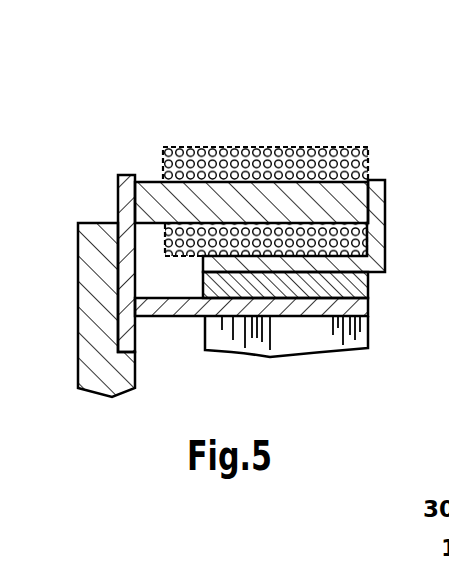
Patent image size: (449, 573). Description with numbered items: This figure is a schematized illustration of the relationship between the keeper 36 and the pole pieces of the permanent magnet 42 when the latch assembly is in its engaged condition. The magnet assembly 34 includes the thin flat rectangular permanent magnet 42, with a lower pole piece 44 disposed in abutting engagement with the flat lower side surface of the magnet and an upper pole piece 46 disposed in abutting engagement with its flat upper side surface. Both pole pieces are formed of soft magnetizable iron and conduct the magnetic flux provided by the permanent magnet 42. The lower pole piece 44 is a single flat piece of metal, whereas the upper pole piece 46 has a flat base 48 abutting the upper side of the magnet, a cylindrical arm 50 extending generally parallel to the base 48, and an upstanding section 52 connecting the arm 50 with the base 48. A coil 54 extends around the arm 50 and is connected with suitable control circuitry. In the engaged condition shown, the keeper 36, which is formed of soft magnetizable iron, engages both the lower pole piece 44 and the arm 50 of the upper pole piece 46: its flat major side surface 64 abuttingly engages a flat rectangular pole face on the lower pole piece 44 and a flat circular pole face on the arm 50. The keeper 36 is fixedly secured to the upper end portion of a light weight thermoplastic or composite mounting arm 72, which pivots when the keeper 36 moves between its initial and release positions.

The magnet assembly 34 is at (334, 123).
The keeper 36 is at (112, 189).
The permanent magnet 42 is at (272, 280).
The lower pole piece 44 is at (327, 316).
The upper pole piece 46 is at (390, 187).
The flat base 48 is at (367, 278).
The cylindrical arm 50 is at (233, 202).
The upstanding section 52 is at (372, 247).
The coil 54 is at (285, 148).
The major side surface 64 is at (136, 262).
The mounting arm 72 is at (118, 368).